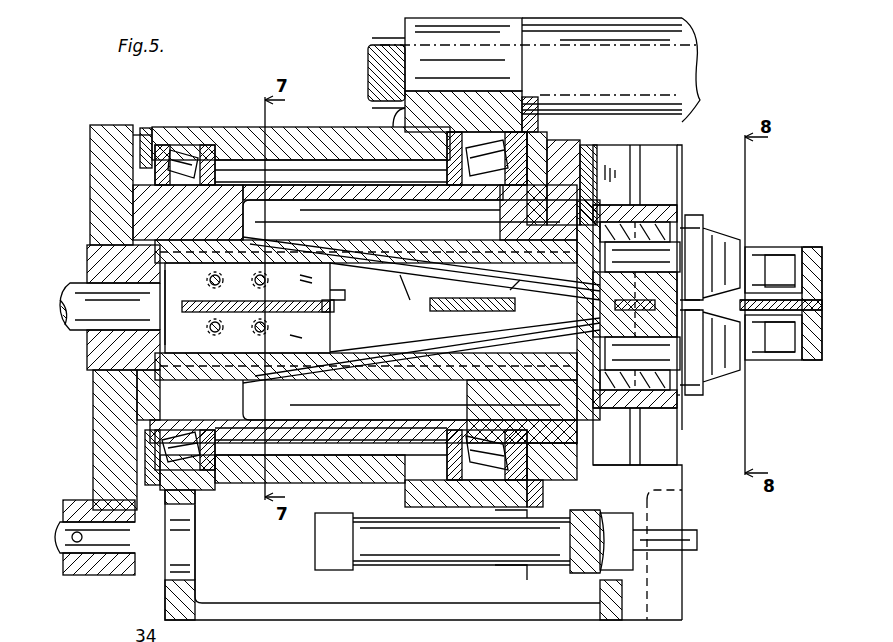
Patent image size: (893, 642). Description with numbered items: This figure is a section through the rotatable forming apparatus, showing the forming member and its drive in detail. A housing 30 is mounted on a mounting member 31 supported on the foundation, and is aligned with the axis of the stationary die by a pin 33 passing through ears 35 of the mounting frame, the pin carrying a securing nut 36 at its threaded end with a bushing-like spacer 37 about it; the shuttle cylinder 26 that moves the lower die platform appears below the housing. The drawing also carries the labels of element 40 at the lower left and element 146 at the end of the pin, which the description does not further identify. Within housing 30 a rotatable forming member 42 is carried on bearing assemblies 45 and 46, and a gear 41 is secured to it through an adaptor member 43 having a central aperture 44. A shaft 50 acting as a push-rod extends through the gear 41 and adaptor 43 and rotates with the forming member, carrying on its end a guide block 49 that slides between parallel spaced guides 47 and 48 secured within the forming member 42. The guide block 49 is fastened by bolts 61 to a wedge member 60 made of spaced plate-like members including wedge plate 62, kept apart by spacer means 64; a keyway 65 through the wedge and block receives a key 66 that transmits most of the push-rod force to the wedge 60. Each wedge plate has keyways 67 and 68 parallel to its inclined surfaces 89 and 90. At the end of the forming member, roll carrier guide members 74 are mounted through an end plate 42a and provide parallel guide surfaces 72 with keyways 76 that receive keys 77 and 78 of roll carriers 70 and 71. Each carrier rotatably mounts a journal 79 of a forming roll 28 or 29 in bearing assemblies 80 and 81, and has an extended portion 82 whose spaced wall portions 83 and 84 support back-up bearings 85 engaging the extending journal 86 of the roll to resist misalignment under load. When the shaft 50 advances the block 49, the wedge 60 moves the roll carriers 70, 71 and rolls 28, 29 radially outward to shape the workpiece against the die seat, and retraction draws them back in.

The shuttle cylinder 26 is at (412, 548).
The forming roll 28 is at (718, 228).
The forming roll 29 is at (722, 378).
The housing 30 is at (232, 135).
The mounting member 31 is at (234, 610).
The pin 33 is at (668, 47).
The ear 35 is at (515, 30).
The securing nut 36 is at (383, 42).
The bushing-like spacer 37 is at (608, 48).
The shaft 40 is at (112, 580).
The gear 41 is at (105, 440).
The rotatable forming member 42 is at (327, 185).
The end plate 42a is at (597, 440).
The adaptor member 43 is at (100, 352).
The aperture 44 is at (105, 280).
The bearing assembly 45 is at (195, 440).
The bearing assembly 46 is at (492, 440).
The guide 47 is at (386, 265).
The guide 48 is at (370, 356).
The guide block 49 is at (304, 333).
The shaft 50 is at (80, 302).
The wedge member 60 is at (540, 316).
The bolt 61 is at (207, 326).
The wedge plate 62 is at (326, 233).
The spacer means 64 is at (447, 300).
The keyway 65 is at (334, 305).
The key 66 is at (308, 300).
The keyway 67 is at (506, 268).
The keyway 68 is at (462, 350).
The roll carrier 70 is at (678, 255).
The roll carrier 71 is at (680, 396).
The guide surface 72 is at (675, 165).
The roll carrier guide member 74 is at (666, 146).
The keyway 76 is at (640, 156).
The key 77 is at (638, 200).
The key 78 is at (630, 418).
The journal 79 is at (690, 232).
The bearing assembly 80 is at (625, 208).
The bearing assembly 81 is at (672, 220).
The extended portion 82 is at (822, 252).
The wall portion 83 is at (822, 290).
The wall portion 84 is at (756, 270).
The back-up bearing 85 is at (786, 272).
The journal 86 is at (770, 250).
The inclined surface 89 is at (366, 386).
The inclined surface 90 is at (410, 220).
The flange 146 is at (690, 66).